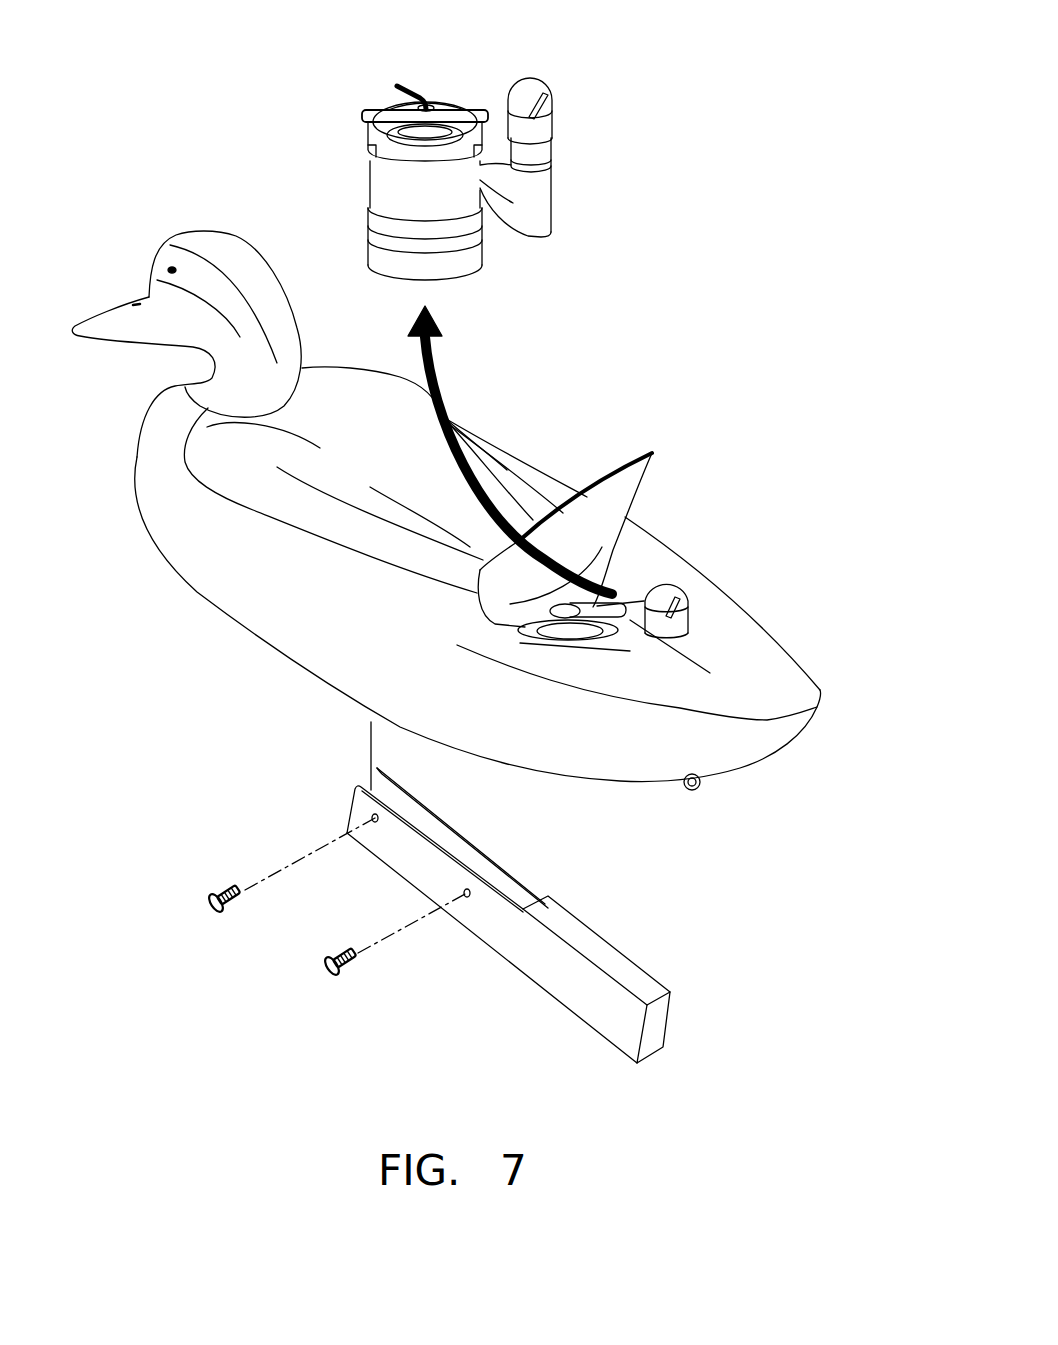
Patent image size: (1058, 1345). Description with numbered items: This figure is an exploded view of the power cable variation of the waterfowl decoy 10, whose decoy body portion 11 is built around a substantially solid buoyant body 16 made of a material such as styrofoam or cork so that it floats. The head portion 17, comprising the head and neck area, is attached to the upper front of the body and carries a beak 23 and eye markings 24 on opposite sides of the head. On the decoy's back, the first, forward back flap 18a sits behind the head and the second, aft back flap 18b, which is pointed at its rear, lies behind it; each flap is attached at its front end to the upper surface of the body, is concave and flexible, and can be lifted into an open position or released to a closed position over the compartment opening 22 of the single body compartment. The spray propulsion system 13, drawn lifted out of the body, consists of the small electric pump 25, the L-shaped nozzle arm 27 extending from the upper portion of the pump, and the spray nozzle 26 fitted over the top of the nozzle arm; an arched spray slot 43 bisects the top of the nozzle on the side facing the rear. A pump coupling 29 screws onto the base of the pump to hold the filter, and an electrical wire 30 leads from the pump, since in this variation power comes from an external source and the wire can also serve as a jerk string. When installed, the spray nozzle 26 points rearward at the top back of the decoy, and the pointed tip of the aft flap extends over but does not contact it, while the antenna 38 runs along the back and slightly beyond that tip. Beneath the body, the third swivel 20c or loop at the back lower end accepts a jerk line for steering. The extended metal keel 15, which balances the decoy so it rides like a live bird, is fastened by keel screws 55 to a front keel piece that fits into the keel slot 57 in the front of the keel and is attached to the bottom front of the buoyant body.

The waterfowl decoy 10 is at (682, 246).
The decoy body portion 11 is at (846, 532).
The spray propulsion system 13 is at (470, 75).
The keel 15 is at (663, 1032).
The buoyant body 16 is at (267, 617).
The head portion 17 is at (248, 266).
The first forward back flap 18a is at (478, 467).
The second aft back flap 18b is at (607, 550).
The third swivel 20c is at (699, 791).
The compartment opening 22 is at (617, 583).
The beak 23 is at (98, 328).
The eye markings 24 is at (170, 266).
The pump 25 is at (383, 178).
The spray nozzle 26 is at (530, 85).
The nozzle arm 27 is at (552, 198).
The pump coupling 29 is at (380, 247).
The electrical wire 30 is at (407, 88).
The antenna 38 is at (652, 453).
The arched spray slot 43 is at (545, 97).
The keel screws 55 is at (328, 969).
The keel slot 57 is at (502, 882).